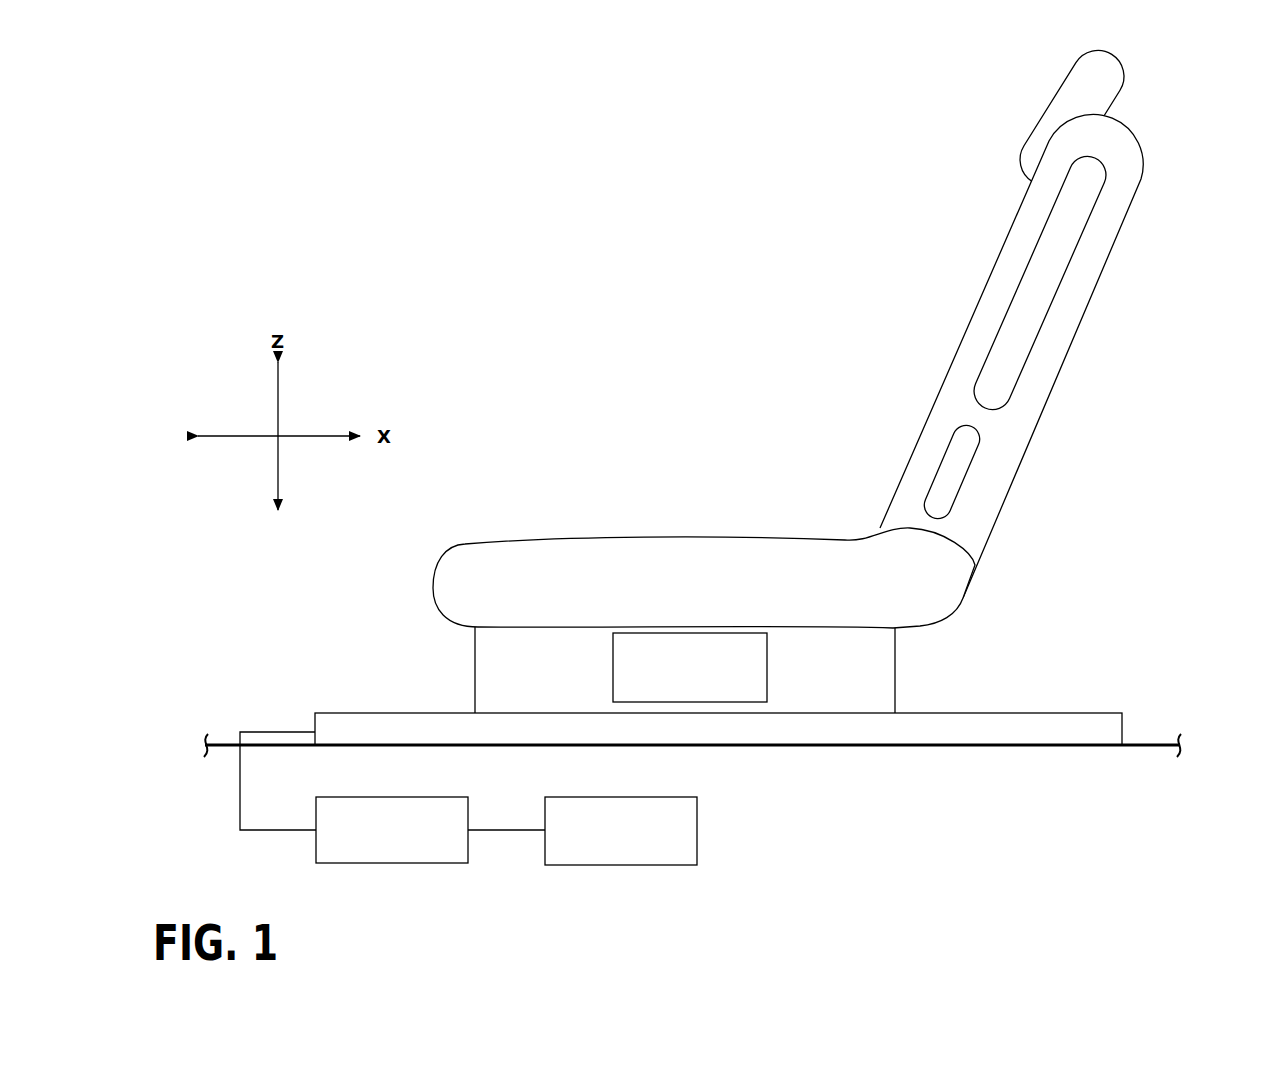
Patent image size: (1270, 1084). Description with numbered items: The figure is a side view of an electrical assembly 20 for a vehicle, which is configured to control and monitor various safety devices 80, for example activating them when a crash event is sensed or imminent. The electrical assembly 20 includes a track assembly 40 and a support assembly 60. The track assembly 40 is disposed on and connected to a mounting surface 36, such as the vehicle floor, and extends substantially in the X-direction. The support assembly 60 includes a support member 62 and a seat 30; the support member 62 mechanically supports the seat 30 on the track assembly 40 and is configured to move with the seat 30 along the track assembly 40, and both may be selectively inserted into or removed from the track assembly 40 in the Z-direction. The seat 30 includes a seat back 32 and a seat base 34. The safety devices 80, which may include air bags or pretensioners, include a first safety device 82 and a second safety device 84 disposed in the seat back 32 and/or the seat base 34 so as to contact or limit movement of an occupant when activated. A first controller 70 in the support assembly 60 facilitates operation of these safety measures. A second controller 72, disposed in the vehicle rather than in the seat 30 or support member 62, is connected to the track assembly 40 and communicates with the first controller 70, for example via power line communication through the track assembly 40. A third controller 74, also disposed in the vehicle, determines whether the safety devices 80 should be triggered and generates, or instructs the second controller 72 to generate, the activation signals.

The electrical assembly 20 is at (727, 476).
The seat 30 is at (1065, 319).
The seat back 32 is at (963, 532).
The seat base 34 is at (940, 593).
The mounting surface 36 is at (1148, 743).
The track assembly 40 is at (1075, 704).
The support assembly 60 is at (678, 719).
The support member 62 is at (895, 670).
The first controller 70 is at (767, 670).
The second controller 72 is at (430, 863).
The third controller 74 is at (658, 865).
The safety devices 80 is at (1120, 140).
The first safety device 82 is at (1030, 312).
The second safety device 84 is at (953, 473).